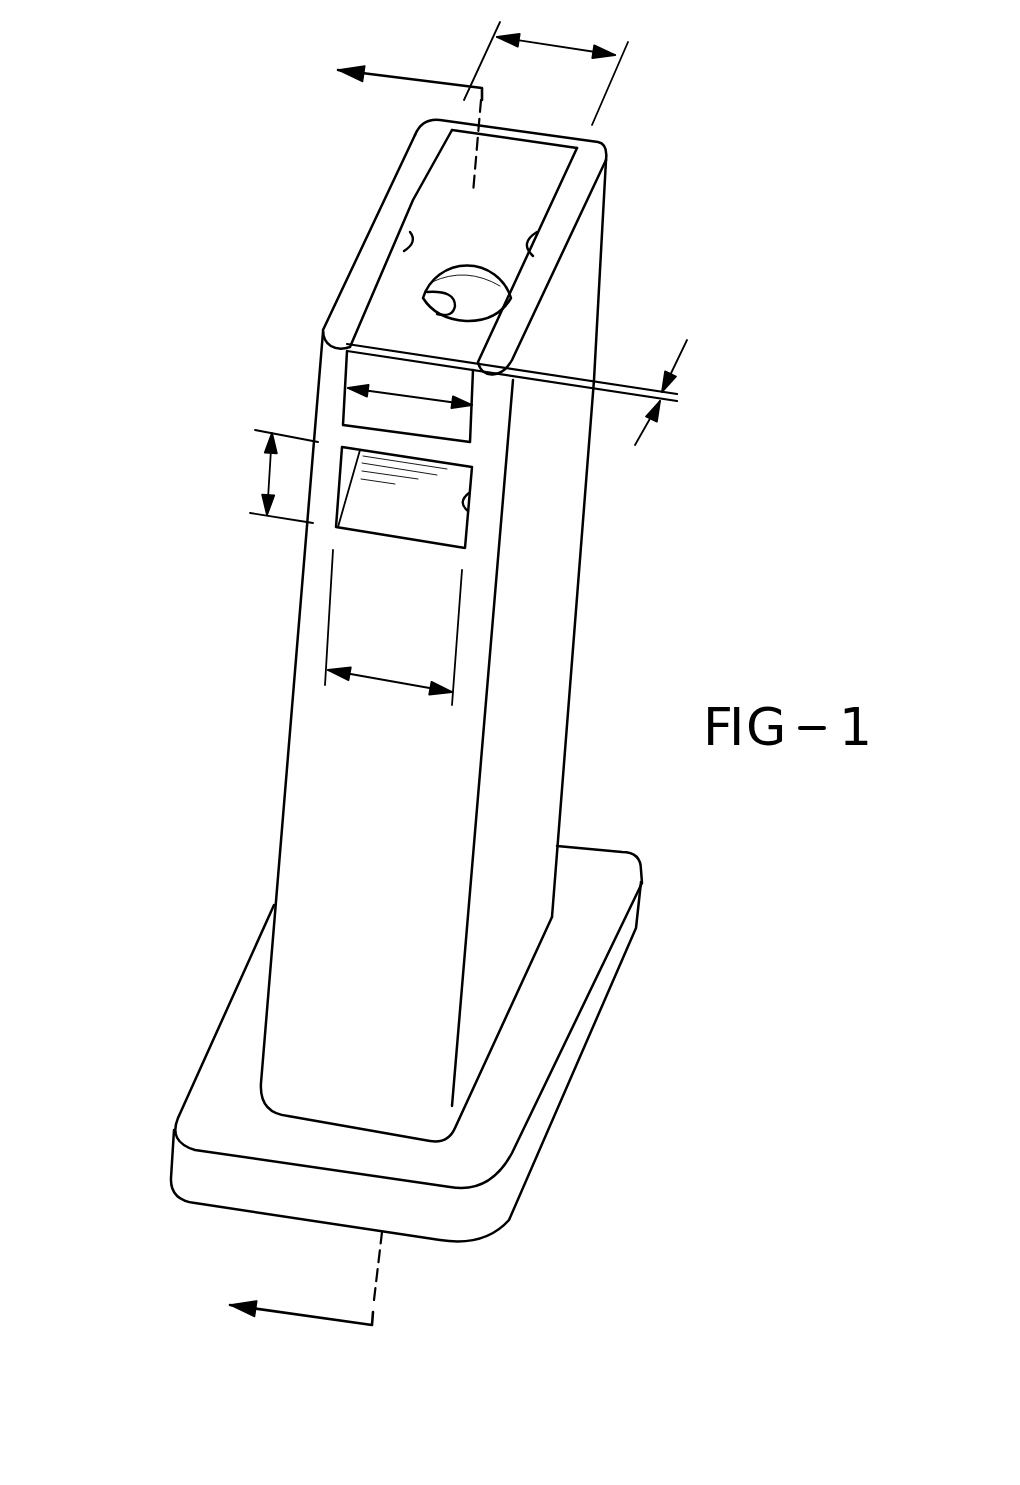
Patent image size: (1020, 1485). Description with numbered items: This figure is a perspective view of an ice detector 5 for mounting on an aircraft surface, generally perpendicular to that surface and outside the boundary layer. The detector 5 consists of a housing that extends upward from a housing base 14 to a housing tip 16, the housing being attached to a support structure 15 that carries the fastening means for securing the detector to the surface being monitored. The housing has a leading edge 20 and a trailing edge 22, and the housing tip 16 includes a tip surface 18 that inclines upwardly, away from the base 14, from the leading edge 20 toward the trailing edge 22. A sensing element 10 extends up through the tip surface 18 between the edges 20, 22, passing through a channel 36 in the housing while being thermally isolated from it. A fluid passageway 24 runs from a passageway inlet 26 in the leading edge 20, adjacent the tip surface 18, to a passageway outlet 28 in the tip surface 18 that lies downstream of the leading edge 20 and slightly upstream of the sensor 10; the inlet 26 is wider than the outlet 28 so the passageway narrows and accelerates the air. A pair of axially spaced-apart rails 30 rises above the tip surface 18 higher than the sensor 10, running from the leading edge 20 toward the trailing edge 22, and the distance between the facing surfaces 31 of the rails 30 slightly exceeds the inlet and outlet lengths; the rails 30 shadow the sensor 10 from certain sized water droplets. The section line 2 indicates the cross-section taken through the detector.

The ice detector 5 is at (203, 187).
The sensing element 10 is at (482, 297).
The housing base 14 is at (282, 1080).
The support structure 15 is at (515, 1082).
The housing tip 16 is at (453, 197).
The tip surface 18 is at (530, 187).
The leading edge 20 is at (405, 831).
The trailing edge 22 is at (575, 622).
The fluid passageway 24 is at (423, 498).
The passageway inlet 26 is at (463, 503).
The passageway outlet 28 is at (462, 356).
The rails 30 is at (367, 275).
The facing surfaces 31 is at (410, 232).
The channel 36 is at (438, 300).
The section line 2- 2 is at (345, 691).